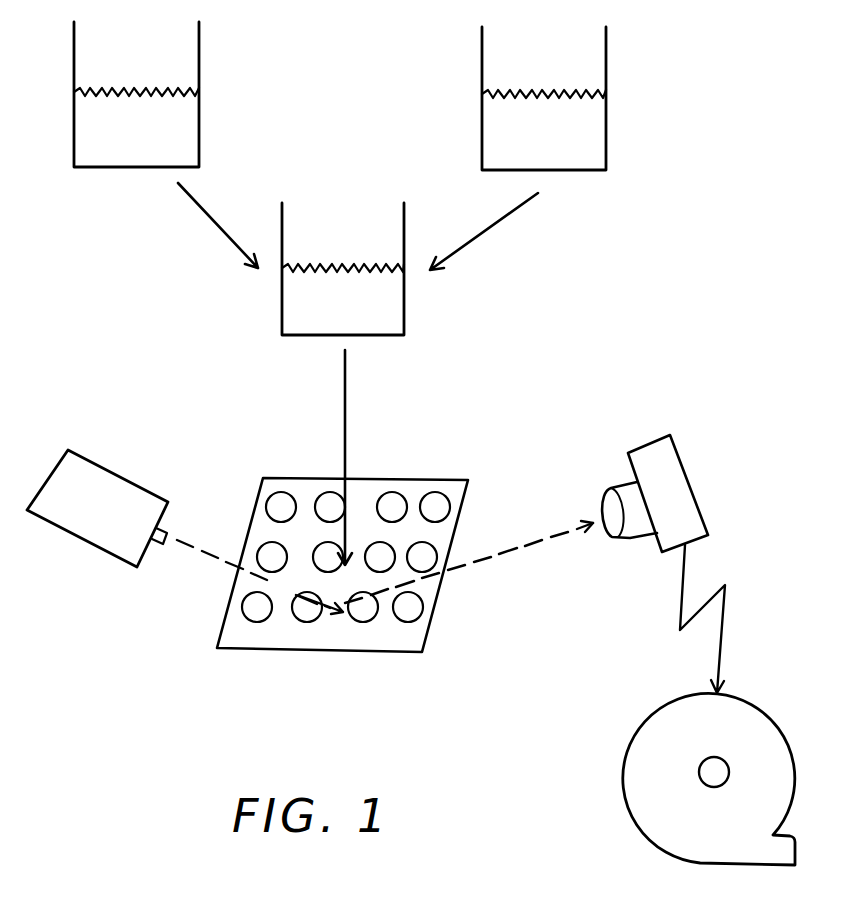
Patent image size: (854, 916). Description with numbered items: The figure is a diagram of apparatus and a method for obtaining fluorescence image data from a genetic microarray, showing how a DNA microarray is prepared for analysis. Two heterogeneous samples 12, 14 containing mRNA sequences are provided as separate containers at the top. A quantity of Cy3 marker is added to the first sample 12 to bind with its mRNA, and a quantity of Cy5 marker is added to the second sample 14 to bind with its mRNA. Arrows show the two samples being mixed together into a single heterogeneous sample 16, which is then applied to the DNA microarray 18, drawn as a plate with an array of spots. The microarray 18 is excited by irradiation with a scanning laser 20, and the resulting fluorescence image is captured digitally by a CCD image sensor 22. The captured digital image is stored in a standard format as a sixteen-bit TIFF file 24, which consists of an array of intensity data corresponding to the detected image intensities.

The first sample 12 is at (142, 141).
The second sample 14 is at (557, 149).
The heterogeneous sample 16 is at (343, 269).
The DNA microarray 18 is at (470, 480).
The scanning laser 20 is at (100, 516).
The CCD image sensor 22 is at (676, 502).
The TIFF file 24 is at (724, 840).